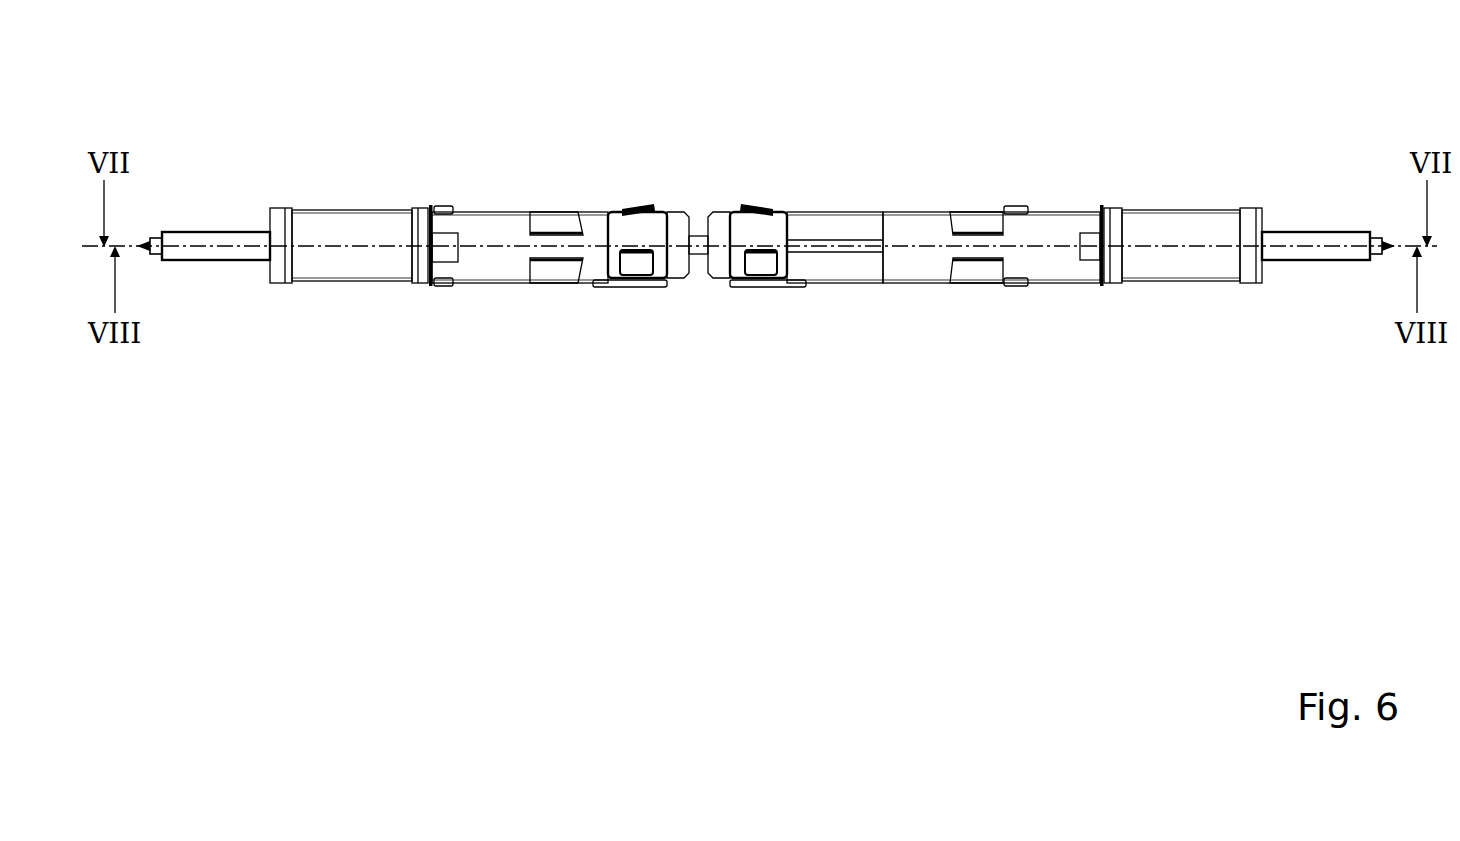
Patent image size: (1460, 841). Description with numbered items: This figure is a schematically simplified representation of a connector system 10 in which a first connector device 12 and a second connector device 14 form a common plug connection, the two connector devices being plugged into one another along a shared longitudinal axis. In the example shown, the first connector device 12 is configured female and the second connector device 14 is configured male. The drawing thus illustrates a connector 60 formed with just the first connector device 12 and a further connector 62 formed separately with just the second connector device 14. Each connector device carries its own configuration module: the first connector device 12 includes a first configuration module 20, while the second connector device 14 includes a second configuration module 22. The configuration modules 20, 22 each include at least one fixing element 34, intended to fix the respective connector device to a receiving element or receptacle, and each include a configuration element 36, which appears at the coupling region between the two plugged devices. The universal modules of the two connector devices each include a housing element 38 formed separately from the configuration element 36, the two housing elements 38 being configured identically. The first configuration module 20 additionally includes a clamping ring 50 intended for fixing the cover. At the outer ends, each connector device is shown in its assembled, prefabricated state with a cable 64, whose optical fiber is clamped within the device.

The connector system 10 is at (799, 114).
The first connector device 12 is at (978, 199).
The second connector device 14 is at (520, 199).
The first configuration module 20 is at (850, 212).
The second configuration module 22 is at (595, 212).
The fixing element 34 is at (657, 210).
The configuration element 36 is at (680, 273).
The housing element 38 is at (472, 212).
The clamping ring 50 is at (657, 273).
The connector 60 is at (1043, 299).
The further connector 62 is at (527, 299).
The cable 64 is at (222, 232).